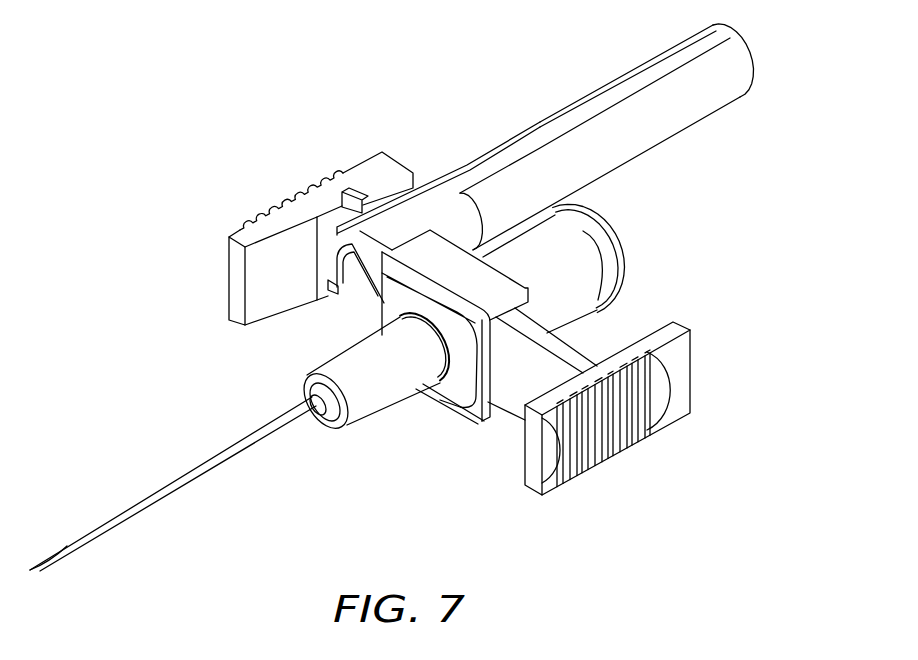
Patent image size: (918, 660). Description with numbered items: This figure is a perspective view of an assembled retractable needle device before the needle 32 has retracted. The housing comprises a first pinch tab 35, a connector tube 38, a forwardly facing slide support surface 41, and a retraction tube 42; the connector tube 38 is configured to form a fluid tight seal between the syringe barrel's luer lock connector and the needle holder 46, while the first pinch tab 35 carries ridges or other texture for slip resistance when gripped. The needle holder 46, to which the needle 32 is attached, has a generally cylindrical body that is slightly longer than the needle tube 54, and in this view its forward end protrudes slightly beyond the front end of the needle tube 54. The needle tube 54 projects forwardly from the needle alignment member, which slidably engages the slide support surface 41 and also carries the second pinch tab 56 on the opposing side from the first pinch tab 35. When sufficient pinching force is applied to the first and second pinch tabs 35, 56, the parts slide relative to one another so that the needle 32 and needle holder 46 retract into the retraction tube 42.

The needle 32 is at (175, 485).
The first pinch tab 35 is at (300, 197).
The connector tube 38 is at (600, 256).
The slide support surface 41 is at (330, 272).
The retraction tube 42 is at (677, 123).
The needle holder 46 is at (333, 428).
The needle tube 54 is at (390, 395).
The second pinch tab 56 is at (628, 440).